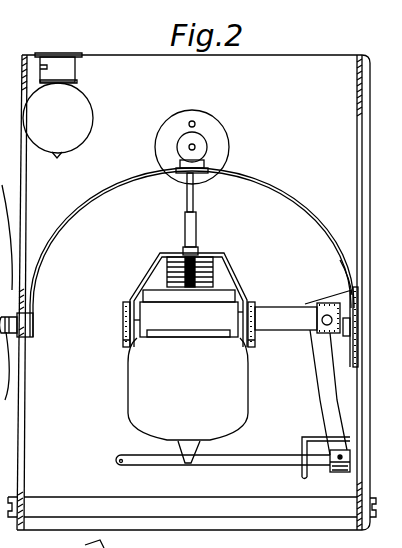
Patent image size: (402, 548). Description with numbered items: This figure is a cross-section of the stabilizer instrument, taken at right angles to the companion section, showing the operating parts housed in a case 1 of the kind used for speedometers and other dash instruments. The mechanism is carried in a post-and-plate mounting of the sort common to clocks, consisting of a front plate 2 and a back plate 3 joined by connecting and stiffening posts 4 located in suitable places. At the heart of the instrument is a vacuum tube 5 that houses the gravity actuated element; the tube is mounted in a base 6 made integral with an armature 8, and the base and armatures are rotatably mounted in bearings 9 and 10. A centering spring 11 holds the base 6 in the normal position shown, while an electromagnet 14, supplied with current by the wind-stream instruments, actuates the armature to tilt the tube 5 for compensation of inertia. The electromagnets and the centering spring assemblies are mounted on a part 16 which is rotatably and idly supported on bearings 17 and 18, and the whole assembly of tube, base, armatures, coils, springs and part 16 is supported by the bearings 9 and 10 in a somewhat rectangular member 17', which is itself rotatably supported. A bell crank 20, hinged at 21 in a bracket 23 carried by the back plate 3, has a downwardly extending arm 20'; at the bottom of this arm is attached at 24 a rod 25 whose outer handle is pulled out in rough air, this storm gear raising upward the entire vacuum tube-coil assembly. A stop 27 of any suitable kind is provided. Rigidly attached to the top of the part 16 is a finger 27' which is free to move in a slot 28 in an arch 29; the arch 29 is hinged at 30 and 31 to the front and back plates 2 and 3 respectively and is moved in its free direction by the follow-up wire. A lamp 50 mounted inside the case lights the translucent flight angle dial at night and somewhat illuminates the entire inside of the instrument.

The case 1 is at (114, 55).
The front plate 2 is at (31, 170).
The back plate 3 is at (357, 158).
The connecting and stiffening posts 4 is at (101, 503).
The vacuum tube 5 is at (188, 400).
The base 6 is at (189, 313).
The armature 8 is at (168, 335).
The bearing 9 is at (123, 312).
The bearing 10 is at (255, 310).
The centering spring 11 is at (197, 250).
The electromagnet 14 is at (167, 272).
The part 16 is at (239, 273).
The bearing 17 is at (149, 311).
The rectangular member 17' is at (187, 349).
The bearing 18 is at (240, 309).
The bell crank 20 is at (297, 318).
The downwardly extending arm 20' is at (315, 392).
The hinge 21 is at (312, 303).
The bracket 23 is at (345, 270).
The attachment point 24 is at (336, 472).
The rod 25 is at (246, 466).
The stop 27 is at (267, 342).
The finger 27' is at (192, 161).
The slot 28 is at (116, 179).
The arch 29 is at (267, 179).
The hinge 30 is at (34, 318).
The hinge 31 is at (340, 350).
The lamp 50 is at (58, 105).